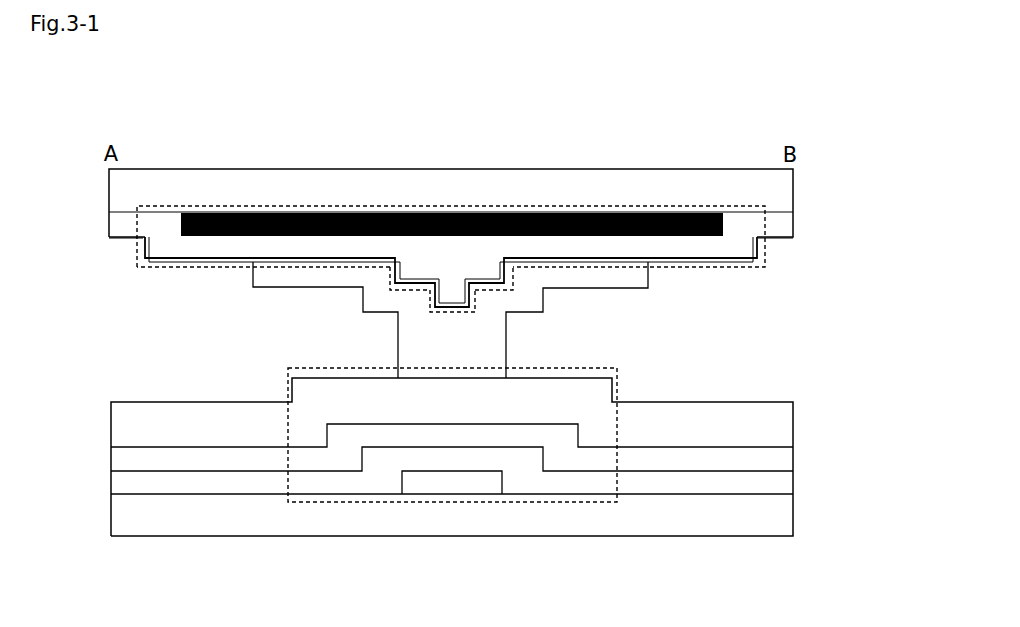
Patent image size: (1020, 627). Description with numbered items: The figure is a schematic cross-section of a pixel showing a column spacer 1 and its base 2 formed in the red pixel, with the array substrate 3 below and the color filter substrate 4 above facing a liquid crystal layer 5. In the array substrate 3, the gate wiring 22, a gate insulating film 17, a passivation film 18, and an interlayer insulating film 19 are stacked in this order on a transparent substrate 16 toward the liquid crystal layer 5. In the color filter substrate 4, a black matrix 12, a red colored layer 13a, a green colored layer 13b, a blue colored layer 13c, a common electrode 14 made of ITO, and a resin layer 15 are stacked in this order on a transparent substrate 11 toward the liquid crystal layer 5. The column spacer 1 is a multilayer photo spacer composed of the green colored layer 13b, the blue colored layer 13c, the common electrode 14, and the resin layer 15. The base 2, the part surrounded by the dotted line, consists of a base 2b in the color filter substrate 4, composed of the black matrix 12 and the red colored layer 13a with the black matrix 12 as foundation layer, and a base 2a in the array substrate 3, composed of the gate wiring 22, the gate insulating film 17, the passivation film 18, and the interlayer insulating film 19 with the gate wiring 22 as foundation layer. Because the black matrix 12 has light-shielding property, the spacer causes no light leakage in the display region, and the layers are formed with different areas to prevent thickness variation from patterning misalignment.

The column spacer 1 is at (563, 117).
The base 2 is at (60, 278).
The base in the array substrate 2a is at (287, 420).
The base in the color filter substrate 2b is at (140, 246).
The array substrate 3 is at (499, 457).
The color filter substrate 4 is at (496, 217).
The liquid crystal layer 5 is at (776, 272).
The transparent substrate 11 is at (782, 192).
The black matrix 12 is at (723, 222).
The red colored layer 13a is at (748, 250).
The green colored layer 13b is at (422, 268).
The blue colored layer 13c is at (450, 290).
The common electrode 14 is at (488, 285).
The resin layer 15 is at (533, 290).
The transparent substrate 16 is at (482, 510).
The gate insulating film 17 is at (787, 485).
The passivation film 18 is at (787, 460).
The interlayer insulating film 19 is at (787, 425).
The gate wiring 22 is at (430, 483).